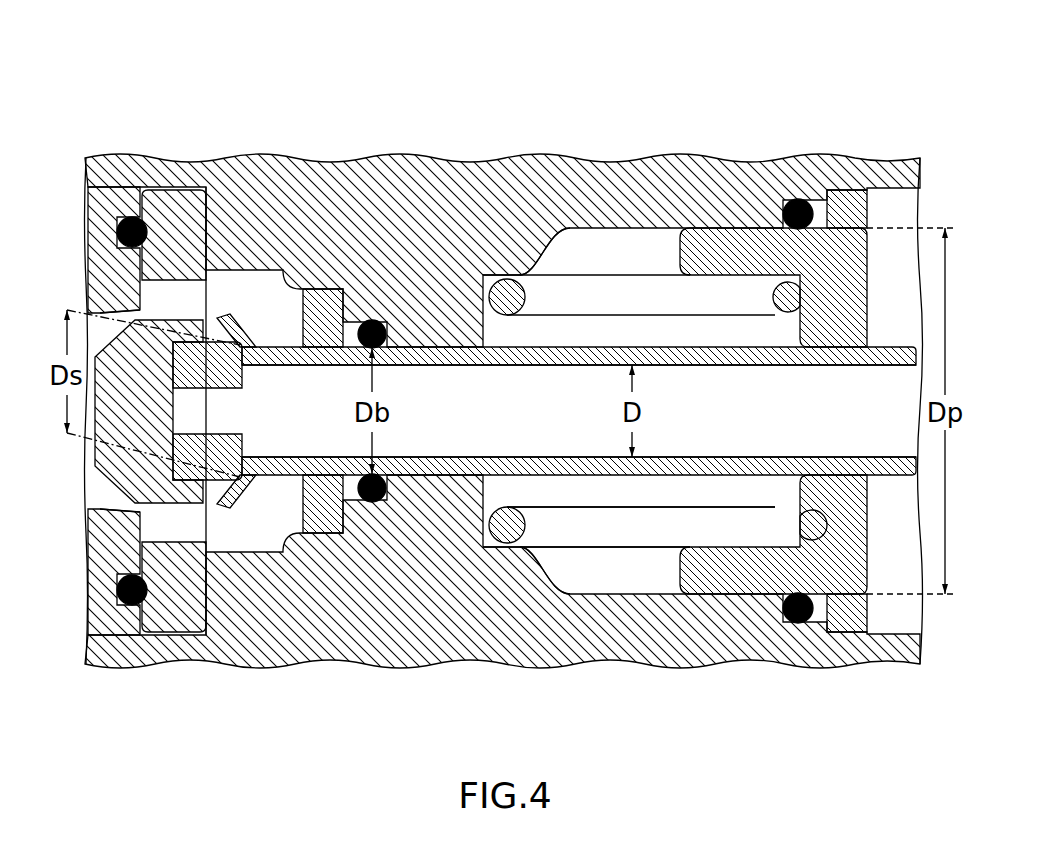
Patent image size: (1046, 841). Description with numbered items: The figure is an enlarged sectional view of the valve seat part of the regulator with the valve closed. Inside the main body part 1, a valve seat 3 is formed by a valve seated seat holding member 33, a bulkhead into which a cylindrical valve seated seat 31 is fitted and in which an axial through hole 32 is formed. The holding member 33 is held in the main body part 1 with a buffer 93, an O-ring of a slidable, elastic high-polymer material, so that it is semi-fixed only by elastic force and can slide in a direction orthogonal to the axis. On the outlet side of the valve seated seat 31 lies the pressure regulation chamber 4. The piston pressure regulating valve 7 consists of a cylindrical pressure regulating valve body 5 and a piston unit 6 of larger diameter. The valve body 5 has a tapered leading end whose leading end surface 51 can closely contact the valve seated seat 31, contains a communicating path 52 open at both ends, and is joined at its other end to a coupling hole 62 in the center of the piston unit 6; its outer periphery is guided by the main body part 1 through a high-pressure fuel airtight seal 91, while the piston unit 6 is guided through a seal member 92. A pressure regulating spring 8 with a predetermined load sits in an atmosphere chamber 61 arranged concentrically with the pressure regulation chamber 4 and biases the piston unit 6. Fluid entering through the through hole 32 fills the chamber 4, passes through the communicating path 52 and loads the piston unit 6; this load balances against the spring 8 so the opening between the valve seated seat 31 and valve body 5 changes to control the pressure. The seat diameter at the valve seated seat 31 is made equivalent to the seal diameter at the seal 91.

The main body part 1 is at (800, 183).
The valve seat 3 is at (115, 497).
The valve seated seat 31 is at (208, 455).
The through hole 32 is at (177, 300).
The valve seated seat holding member 33 is at (92, 467).
The pressure regulation chamber 4 is at (287, 283).
The pressure regulating valve body 5 is at (617, 340).
The leading end surface 51 is at (207, 325).
The communicating path 52 is at (442, 415).
The piston unit 6 is at (743, 253).
The atmosphere chamber 61 is at (590, 253).
The coupling hole 62 is at (850, 347).
The piston pressure regulating valve 7 is at (678, 297).
The pressure regulating spring 8 is at (637, 523).
The high-pressure fuel airtight seal 91 is at (370, 502).
The seal member 92 is at (792, 622).
The buffer 93 is at (132, 606).